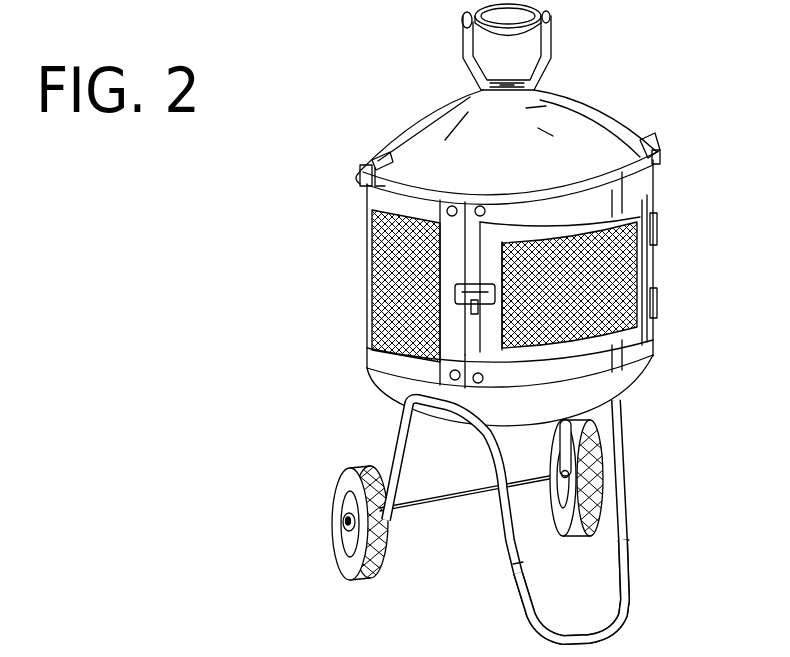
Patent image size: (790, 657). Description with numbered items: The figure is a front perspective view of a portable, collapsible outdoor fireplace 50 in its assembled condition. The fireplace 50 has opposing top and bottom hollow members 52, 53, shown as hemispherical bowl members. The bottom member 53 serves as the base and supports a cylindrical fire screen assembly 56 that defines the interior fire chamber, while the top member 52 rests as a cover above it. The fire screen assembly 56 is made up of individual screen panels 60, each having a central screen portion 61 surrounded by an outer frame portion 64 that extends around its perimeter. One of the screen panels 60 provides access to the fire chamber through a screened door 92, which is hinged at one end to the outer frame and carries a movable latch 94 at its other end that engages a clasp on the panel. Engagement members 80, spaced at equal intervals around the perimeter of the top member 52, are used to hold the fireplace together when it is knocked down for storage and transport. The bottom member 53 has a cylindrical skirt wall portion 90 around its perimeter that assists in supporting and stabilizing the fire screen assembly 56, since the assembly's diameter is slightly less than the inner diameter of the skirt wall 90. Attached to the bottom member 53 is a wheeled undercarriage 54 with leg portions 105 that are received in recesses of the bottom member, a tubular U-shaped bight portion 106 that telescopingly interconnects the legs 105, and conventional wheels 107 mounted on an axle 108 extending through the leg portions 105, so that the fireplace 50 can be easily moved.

The collapsible fireplace 50 is at (316, 210).
The top hollow member 52 is at (595, 127).
The bottom hollow member 53 is at (636, 382).
The wheeled undercarriage 54 is at (637, 583).
The fire screen assembly 56 is at (659, 177).
The screen panel 60 is at (370, 293).
The central screen portion 61 is at (372, 245).
The outer frame portion 64 is at (378, 198).
The engagement member 80 is at (373, 160).
The skirt wall portion 90 is at (362, 365).
The screened door 92 is at (627, 352).
The movable latch 94 is at (455, 297).
The leg portion 105 is at (618, 448).
The tubular U-shaped bight portion 106 is at (608, 622).
The wheel 107 is at (338, 553).
The axle 108 is at (437, 506).